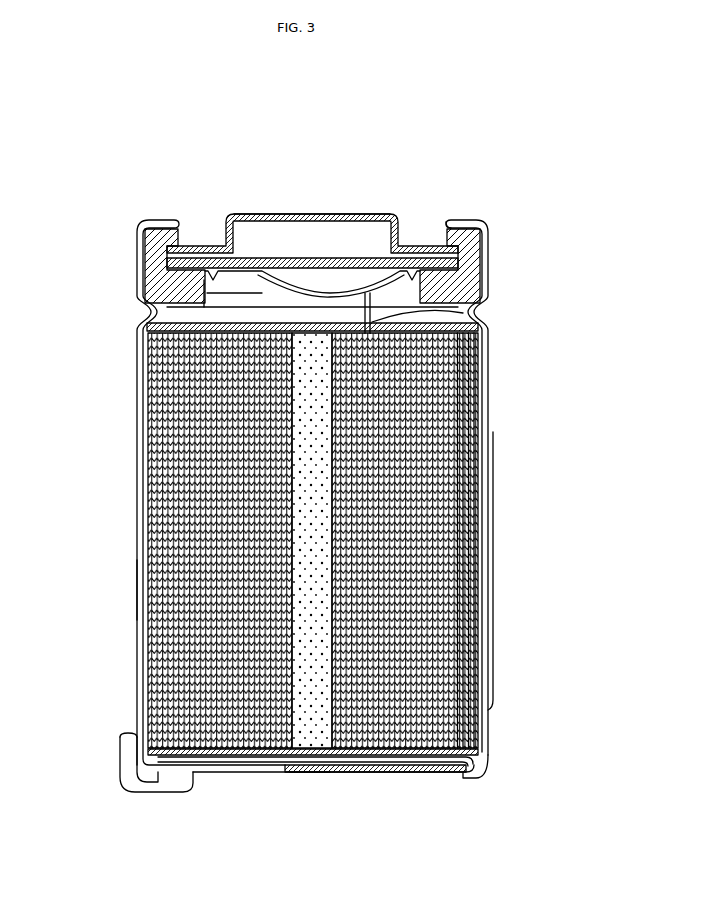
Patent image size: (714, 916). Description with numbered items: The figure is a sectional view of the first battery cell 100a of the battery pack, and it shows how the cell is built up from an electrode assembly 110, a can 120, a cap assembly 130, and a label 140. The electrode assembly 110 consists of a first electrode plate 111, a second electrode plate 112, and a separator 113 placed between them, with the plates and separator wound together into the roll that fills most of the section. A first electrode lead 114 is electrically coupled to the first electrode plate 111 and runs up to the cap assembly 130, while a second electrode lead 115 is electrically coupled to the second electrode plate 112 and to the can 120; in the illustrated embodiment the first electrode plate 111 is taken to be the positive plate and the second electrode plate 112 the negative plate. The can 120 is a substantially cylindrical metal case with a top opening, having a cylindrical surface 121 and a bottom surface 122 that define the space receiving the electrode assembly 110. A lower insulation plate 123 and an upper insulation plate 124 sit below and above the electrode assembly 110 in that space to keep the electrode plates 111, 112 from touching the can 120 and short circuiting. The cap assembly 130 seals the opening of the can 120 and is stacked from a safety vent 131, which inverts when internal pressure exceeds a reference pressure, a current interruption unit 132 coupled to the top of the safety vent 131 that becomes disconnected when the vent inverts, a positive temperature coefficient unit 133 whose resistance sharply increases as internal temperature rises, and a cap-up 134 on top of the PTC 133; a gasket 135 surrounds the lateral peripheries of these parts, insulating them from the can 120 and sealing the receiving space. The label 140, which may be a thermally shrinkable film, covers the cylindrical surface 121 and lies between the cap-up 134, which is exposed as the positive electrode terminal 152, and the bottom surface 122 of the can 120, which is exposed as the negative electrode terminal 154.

The first battery cell 100a is at (146, 171).
The electrode assembly 110 is at (538, 345).
The first electrode plate 111 is at (460, 372).
The second electrode plate 112 is at (464, 400).
The separator 113 is at (460, 384).
The first electrode lead 114 is at (462, 338).
The second electrode lead 115 is at (493, 432).
The can 120 is at (70, 706).
The cylindrical surface 121 is at (140, 691).
The bottom surface 122 is at (120, 735).
The lower insulation plate 123 is at (230, 756).
The upper insulation plate 124 is at (170, 328).
The cap assembly 130 is at (487, 135).
The safety vent 131 is at (404, 250).
The current interruption unit 132 is at (356, 270).
The positive temperature coefficient unit 133 is at (426, 245).
The cap-up 134 is at (338, 262).
The gasket 135 is at (433, 222).
The label 140 is at (138, 591).
The positive electrode terminal 152 is at (282, 197).
The negative electrode terminal 154 is at (305, 794).